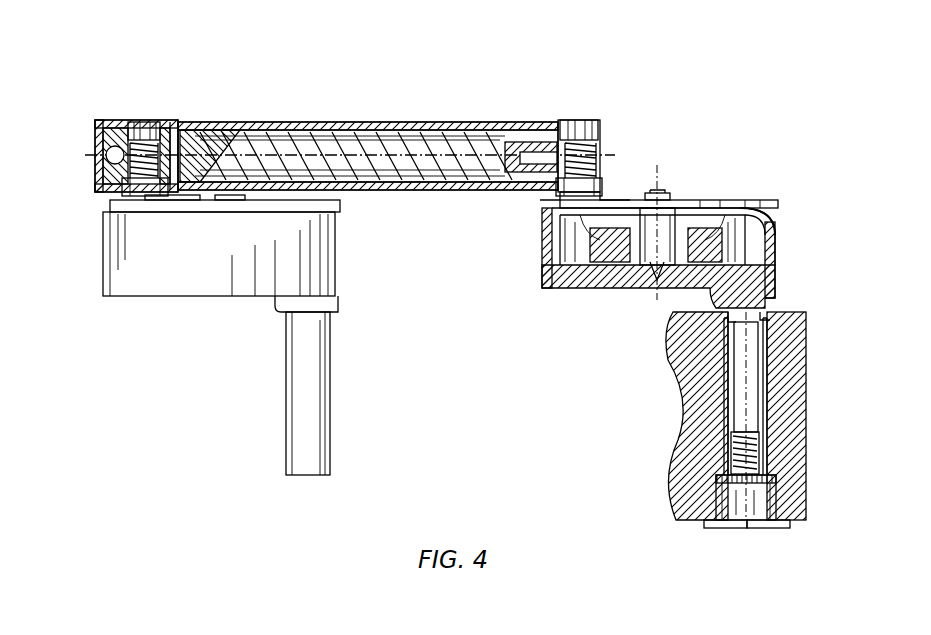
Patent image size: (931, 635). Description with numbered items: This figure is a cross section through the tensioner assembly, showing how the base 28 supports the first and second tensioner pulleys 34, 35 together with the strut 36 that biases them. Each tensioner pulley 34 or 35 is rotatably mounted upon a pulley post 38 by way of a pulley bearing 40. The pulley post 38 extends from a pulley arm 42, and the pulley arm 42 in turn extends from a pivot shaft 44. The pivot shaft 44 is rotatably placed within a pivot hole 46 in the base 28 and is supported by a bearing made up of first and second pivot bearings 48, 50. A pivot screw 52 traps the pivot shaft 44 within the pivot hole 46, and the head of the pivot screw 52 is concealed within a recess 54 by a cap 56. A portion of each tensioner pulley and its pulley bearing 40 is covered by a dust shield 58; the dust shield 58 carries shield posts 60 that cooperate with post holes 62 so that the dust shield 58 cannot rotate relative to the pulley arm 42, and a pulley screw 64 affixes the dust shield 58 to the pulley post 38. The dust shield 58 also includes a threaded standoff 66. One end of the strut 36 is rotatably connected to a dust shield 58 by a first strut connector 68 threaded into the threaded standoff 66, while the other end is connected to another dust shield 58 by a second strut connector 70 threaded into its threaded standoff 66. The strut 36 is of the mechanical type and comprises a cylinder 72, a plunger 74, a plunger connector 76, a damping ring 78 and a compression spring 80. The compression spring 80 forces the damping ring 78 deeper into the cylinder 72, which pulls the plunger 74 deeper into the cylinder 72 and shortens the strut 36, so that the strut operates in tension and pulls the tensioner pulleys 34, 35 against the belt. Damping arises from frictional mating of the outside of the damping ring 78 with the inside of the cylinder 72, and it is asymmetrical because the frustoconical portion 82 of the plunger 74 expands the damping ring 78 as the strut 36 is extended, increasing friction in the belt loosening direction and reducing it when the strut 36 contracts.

The base 28 is at (805, 458).
The first tensioner pulley 34 is at (542, 240).
The second tensioner pulley 35 is at (338, 262).
The strut 36 is at (455, 285).
The pulley post 38 is at (673, 248).
The pulley bearing 40 is at (770, 258).
The pulley arm 42 is at (597, 288).
The pivot shaft 44 is at (735, 393).
The pivot hole 46 is at (765, 398).
The first pivot bearing 48 is at (770, 333).
The second pivot bearing 50 is at (745, 466).
The pivot screw 52 is at (750, 522).
The recess 54 is at (735, 532).
The cap 56 is at (788, 535).
The dust shield 58 is at (695, 208).
The shield posts 60 is at (675, 237).
The post holes 62 is at (778, 208).
The pulley screw 64 is at (658, 196).
The threaded standoff 66 is at (130, 186).
The first strut connector 68 is at (582, 122).
The second strut connector 70 is at (132, 122).
The cylinder 72 is at (272, 122).
The plunger 74 is at (372, 122).
The plunger connector 76 is at (530, 122).
The damping ring 78 is at (203, 122).
The compression spring 80 is at (432, 122).
The frustoconical portion 82 is at (178, 122).